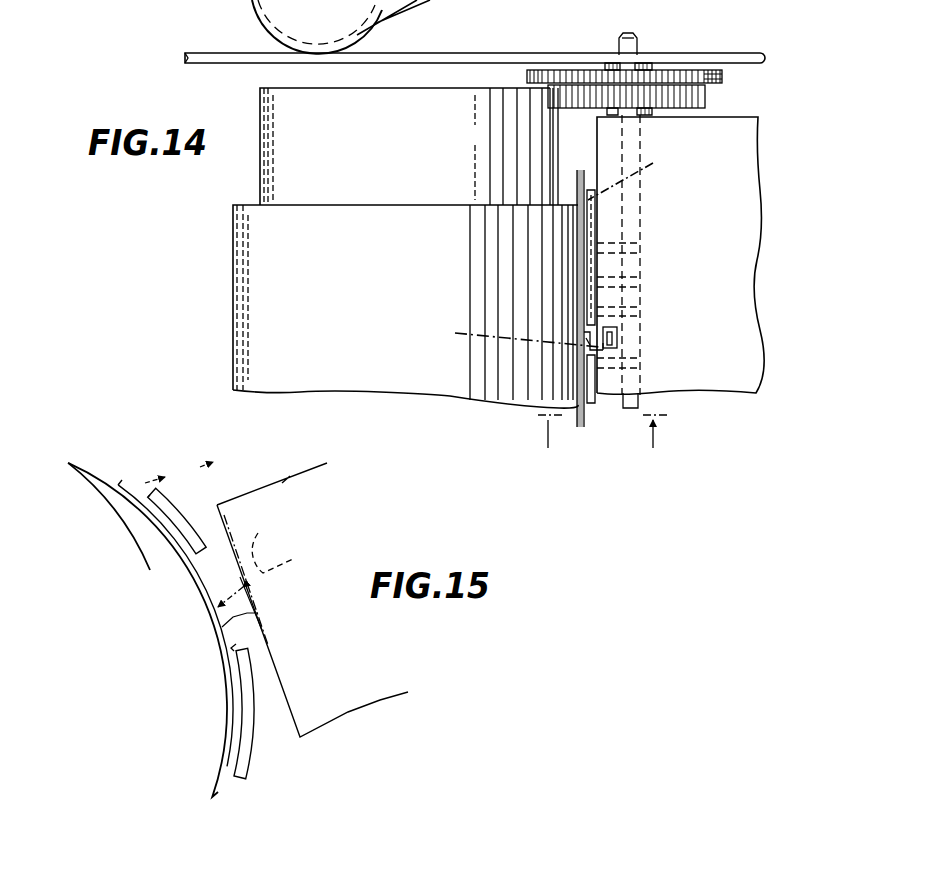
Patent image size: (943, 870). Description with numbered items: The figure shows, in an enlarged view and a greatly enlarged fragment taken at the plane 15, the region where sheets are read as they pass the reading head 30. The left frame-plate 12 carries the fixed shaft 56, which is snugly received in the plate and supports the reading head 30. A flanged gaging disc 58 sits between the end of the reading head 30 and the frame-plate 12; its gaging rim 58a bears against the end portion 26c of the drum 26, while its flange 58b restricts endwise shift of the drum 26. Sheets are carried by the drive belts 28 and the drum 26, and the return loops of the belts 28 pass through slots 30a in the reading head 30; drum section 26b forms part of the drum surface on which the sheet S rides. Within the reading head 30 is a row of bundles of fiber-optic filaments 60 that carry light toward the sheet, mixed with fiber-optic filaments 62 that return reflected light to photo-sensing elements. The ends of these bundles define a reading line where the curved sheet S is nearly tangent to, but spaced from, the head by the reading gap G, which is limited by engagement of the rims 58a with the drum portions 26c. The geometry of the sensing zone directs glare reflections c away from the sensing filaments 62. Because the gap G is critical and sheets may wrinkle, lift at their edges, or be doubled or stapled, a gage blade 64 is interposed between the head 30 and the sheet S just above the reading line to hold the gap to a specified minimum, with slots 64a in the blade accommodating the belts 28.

In FIG. 14, the left frame-plate 12 is at (586, 50).
In FIG. 14, the fixed shaft 56 is at (638, 38).
In FIG. 14, the flanged gaging disc 58 is at (671, 63).
In FIG. 14, the gaging rim 58a is at (705, 95).
In FIG. 14, the flange 58b is at (722, 76).
In FIG. 14, the end portion of drum 26c is at (400, 152).
In FIG. 14, the drum section 26b is at (387, 289).
In FIG. 15, the drum section 26b is at (75, 465).
In FIG. 15, the drum 26 is at (196, 724).
In FIG. 14, the sheet S is at (577, 170).
In FIG. 15, the sheet S is at (128, 484).
In FIG. 14, the reading head 30 is at (770, 170).
In FIG. 15, the reading head 30 is at (285, 480).
In FIG. 14, the slot 30a is at (602, 345).
In FIG. 14, the fiber-optic filaments 60 is at (656, 288).
In FIG. 15, the fiber-optic filaments 60 is at (286, 543).
In FIG. 14, the fiber-optic filaments 62 is at (612, 300).
In FIG. 15, the fiber-optic filaments 62 is at (286, 543).
In FIG. 14, the gage blade 64 is at (636, 173).
In FIG. 14, the slot 64a is at (508, 340).
In FIG. 14, the drive belt 28 is at (587, 337).
In FIG. 15, the drive belt 28 is at (155, 513).
In FIG. 14, the section line for FIG. 15 is at (604, 450).
In FIG. 15, the reading gap G is at (179, 466).
In FIG. 15, the glare reflections c is at (230, 630).